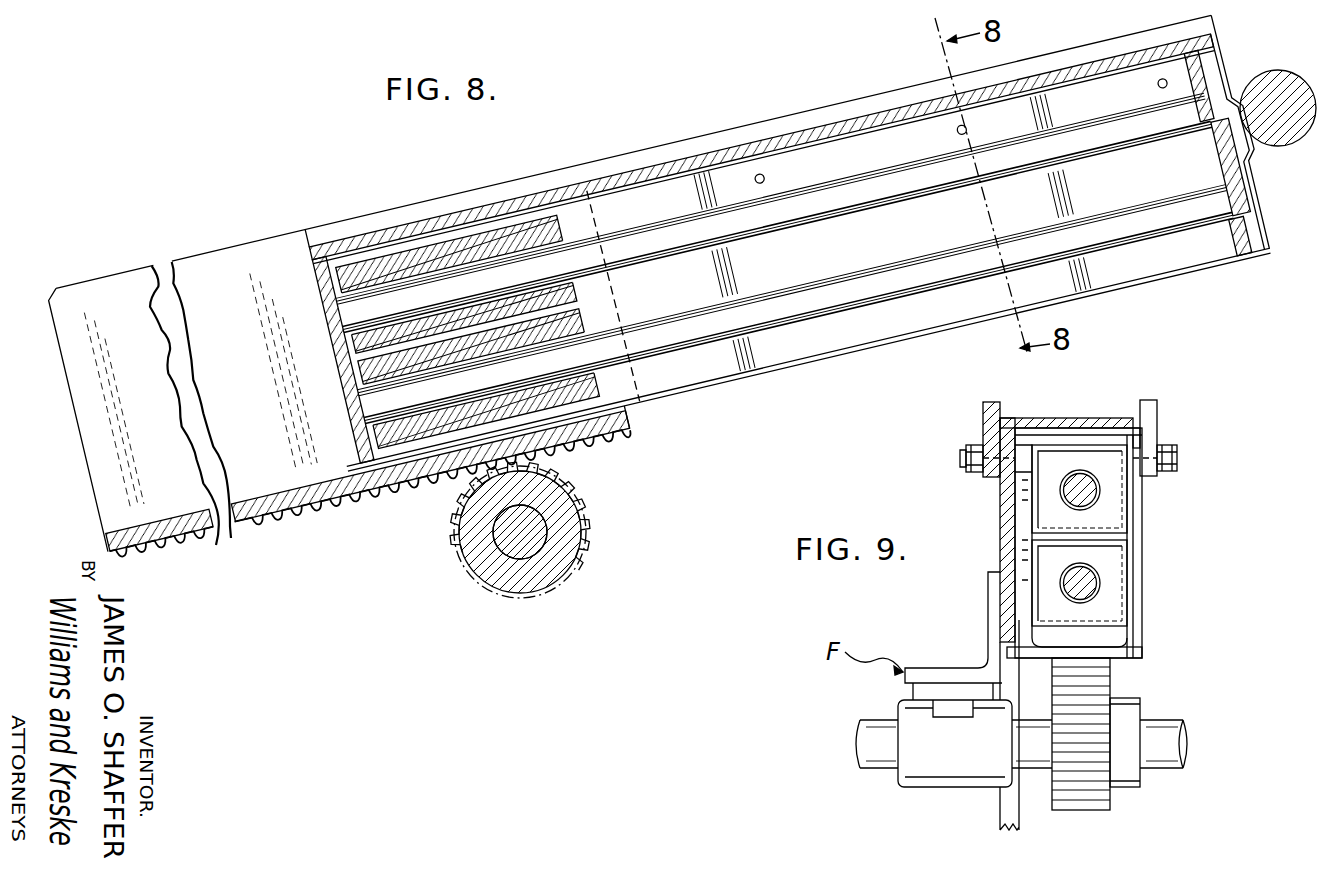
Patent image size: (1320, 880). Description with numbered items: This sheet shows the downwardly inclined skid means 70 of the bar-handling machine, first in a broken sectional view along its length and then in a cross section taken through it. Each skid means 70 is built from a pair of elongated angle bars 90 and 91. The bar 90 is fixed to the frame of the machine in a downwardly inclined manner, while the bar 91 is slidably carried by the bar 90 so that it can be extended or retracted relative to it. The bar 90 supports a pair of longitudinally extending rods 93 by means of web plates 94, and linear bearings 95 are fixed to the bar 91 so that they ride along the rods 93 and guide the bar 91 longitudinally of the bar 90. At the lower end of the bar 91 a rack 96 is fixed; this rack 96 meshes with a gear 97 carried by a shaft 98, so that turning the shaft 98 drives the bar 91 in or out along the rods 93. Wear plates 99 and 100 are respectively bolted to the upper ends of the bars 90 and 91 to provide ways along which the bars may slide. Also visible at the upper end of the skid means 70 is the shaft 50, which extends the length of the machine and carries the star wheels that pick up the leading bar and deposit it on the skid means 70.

In FIG. 8, the shaft 50 is at (1270, 90).
In FIG. 8, the skid means 70 is at (602, 152).
In FIG. 8, the angle bar 90 is at (688, 142).
In FIG. 9, the angle bar 90 is at (1000, 537).
In FIG. 8, the angle bar 91 is at (252, 262).
In FIG. 9, the angle bar 91 is at (1138, 504).
In FIG. 8, the rods 93 is at (795, 298).
In FIG. 9, the rods 93 is at (1066, 490).
In FIG. 8, the web plates 94 is at (330, 284).
In FIG. 8, the linear bearings 95 is at (450, 245).
In FIG. 9, the linear bearings 95 is at (1110, 557).
In FIG. 8, the rack 96 is at (360, 518).
In FIG. 9, the rack 96 is at (1100, 667).
In FIG. 8, the gear 97 is at (500, 572).
In FIG. 9, the gear 97 is at (1090, 795).
In FIG. 8, the shaft 98 is at (540, 548).
In FIG. 9, the shaft 98 is at (1168, 730).
In FIG. 9, the wear plate 99 is at (985, 418).
In FIG. 9, the wear plate 100 is at (1152, 408).